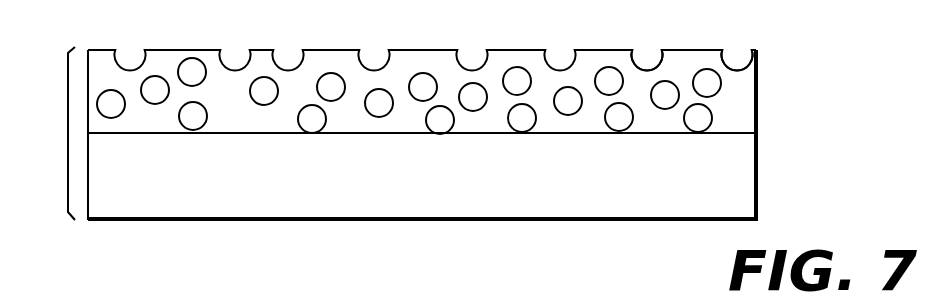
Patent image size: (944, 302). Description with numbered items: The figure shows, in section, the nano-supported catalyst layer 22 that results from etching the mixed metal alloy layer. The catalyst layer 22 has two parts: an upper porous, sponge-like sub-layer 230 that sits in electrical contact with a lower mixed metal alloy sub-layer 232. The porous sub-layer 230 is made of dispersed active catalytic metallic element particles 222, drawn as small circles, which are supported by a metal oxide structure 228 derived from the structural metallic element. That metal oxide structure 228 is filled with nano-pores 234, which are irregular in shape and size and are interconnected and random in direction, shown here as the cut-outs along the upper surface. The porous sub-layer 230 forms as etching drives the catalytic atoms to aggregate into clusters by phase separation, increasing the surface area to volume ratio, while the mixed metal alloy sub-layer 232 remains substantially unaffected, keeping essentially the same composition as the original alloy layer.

The nano-supported catalyst layer 22 is at (395, 134).
The active catalytic metallic element particles 222 is at (688, 62).
The metal oxide structure 228 is at (415, 50).
The porous sub-layer 230 is at (747, 97).
The mixed metal alloy sub-layer 232 is at (745, 171).
The nano-pores 234 is at (190, 65).